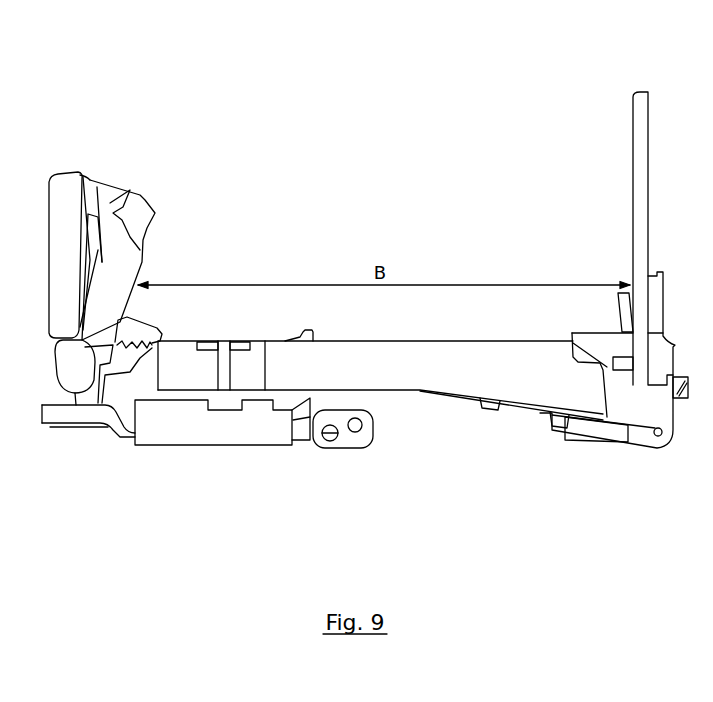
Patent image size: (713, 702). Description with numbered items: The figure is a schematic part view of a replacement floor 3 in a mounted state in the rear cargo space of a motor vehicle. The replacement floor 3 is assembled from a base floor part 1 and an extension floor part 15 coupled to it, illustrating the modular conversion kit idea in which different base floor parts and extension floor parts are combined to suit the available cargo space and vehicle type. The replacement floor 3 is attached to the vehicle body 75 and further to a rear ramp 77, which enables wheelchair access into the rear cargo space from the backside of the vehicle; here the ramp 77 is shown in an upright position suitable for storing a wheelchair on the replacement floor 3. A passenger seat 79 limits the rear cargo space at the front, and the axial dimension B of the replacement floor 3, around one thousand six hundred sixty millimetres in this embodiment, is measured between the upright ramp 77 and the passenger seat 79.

The base floor part 1 is at (479, 379).
The replacement floor 3 is at (547, 325).
The extension floor part 15 is at (191, 375).
The vehicle body 75 is at (88, 413).
The rear ramp 77 is at (664, 165).
The passenger seat 79 is at (96, 163).